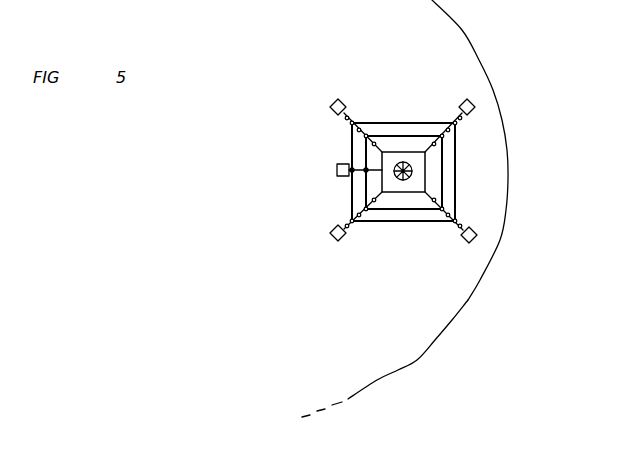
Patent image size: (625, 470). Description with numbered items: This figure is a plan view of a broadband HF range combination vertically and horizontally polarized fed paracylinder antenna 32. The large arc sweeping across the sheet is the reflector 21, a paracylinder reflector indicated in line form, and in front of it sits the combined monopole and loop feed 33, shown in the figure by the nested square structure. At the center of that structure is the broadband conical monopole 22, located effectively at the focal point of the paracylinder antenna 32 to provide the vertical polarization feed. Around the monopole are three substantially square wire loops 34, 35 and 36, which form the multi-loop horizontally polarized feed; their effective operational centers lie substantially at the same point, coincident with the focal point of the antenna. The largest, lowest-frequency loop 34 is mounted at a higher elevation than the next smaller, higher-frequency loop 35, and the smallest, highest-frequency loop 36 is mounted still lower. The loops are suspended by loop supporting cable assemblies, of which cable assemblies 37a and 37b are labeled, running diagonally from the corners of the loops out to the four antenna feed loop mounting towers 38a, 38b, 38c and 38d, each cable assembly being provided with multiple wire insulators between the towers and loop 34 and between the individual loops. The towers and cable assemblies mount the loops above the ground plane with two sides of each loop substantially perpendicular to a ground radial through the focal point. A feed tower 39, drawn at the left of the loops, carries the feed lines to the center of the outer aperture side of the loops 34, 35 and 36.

The reflector 21 is at (425, 347).
The broadband conical monopole 22 is at (406, 177).
The paracylinder antenna 32 is at (473, 40).
The combined monopole and loop feed 33 is at (392, 231).
The wire loop 34 is at (375, 123).
The wire loop 35 is at (388, 136).
The wire loop 36 is at (403, 152).
The loop supporting cable assembly 37a is at (357, 131).
The loop supporting cable assembly 37b is at (446, 131).
The antenna feed loop mounting tower 38a is at (333, 101).
The antenna feed loop mounting tower 38b is at (462, 101).
The antenna feed loop mounting tower 38c is at (465, 242).
The antenna feed loop mounting tower 38d is at (333, 240).
The feed tower 39 is at (337, 170).